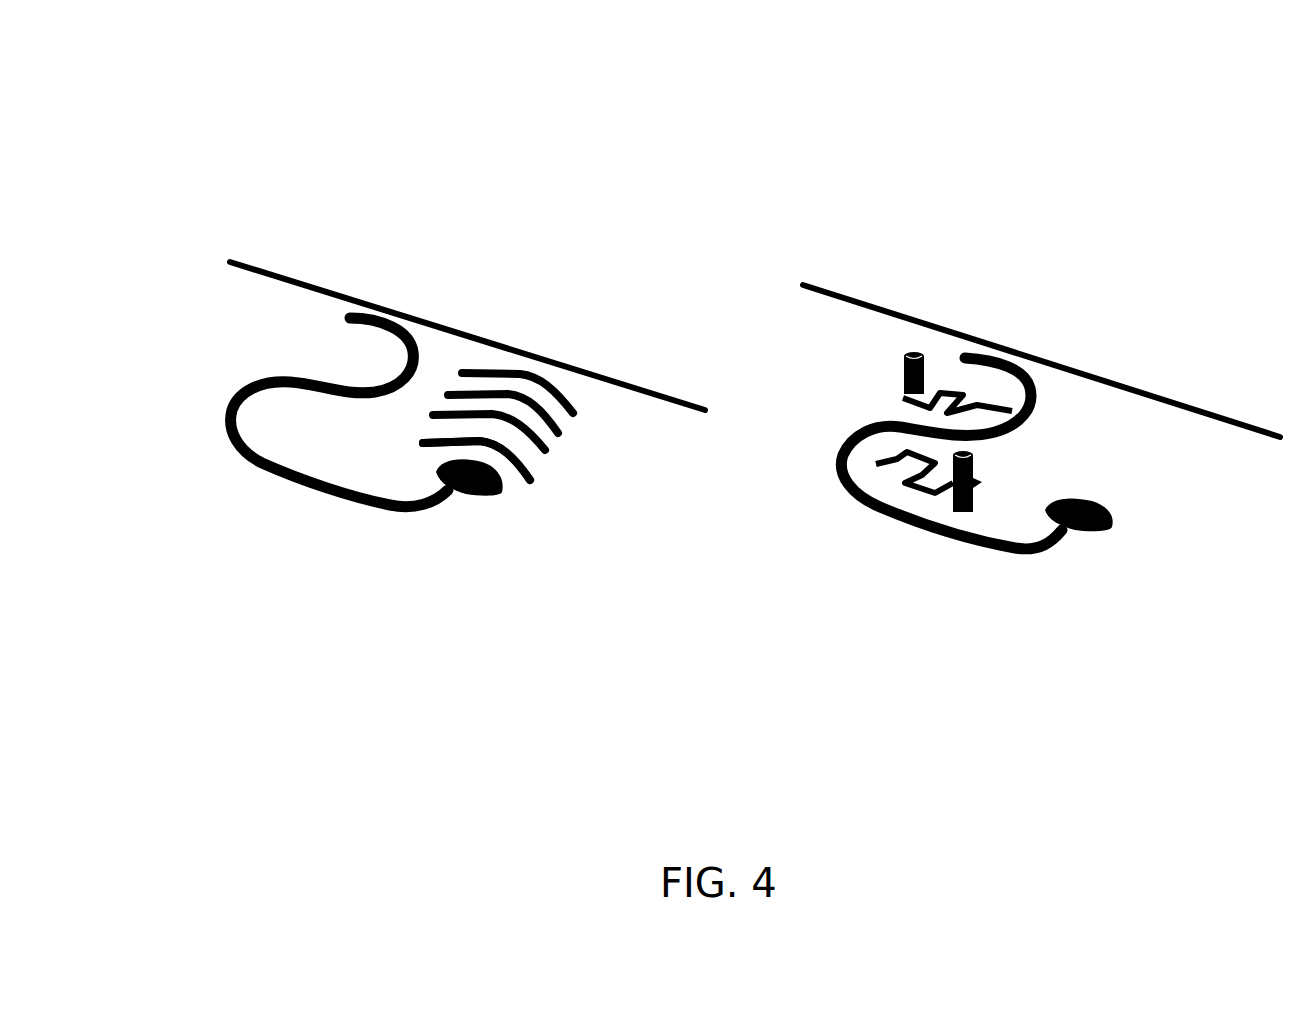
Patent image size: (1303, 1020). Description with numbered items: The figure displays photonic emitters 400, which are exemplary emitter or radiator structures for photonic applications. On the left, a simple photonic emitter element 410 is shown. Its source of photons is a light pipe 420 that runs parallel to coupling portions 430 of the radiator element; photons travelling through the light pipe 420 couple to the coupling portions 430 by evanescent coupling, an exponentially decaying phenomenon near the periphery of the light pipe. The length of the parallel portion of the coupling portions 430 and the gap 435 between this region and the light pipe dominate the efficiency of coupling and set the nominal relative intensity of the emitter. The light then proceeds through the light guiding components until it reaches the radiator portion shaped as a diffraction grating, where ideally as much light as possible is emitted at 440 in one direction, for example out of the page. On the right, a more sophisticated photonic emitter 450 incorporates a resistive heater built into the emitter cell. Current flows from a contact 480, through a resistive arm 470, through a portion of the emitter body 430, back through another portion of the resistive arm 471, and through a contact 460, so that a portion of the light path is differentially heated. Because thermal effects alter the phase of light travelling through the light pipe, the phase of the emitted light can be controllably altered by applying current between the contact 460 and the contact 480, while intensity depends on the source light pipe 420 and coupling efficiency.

The photonic emitters 400 is at (332, 113).
The simple photonic emitter element 410 is at (438, 655).
The light pipe 420 is at (302, 282).
The coupling portions 430 is at (422, 353).
The gap 435 is at (352, 306).
The emission location 440 is at (540, 447).
The sophisticated photonic emitter 450 is at (1056, 693).
The contact 460 is at (918, 350).
The resistive arm 470 is at (977, 405).
The resistive arm portion 471 is at (895, 470).
The contact 480 is at (957, 510).